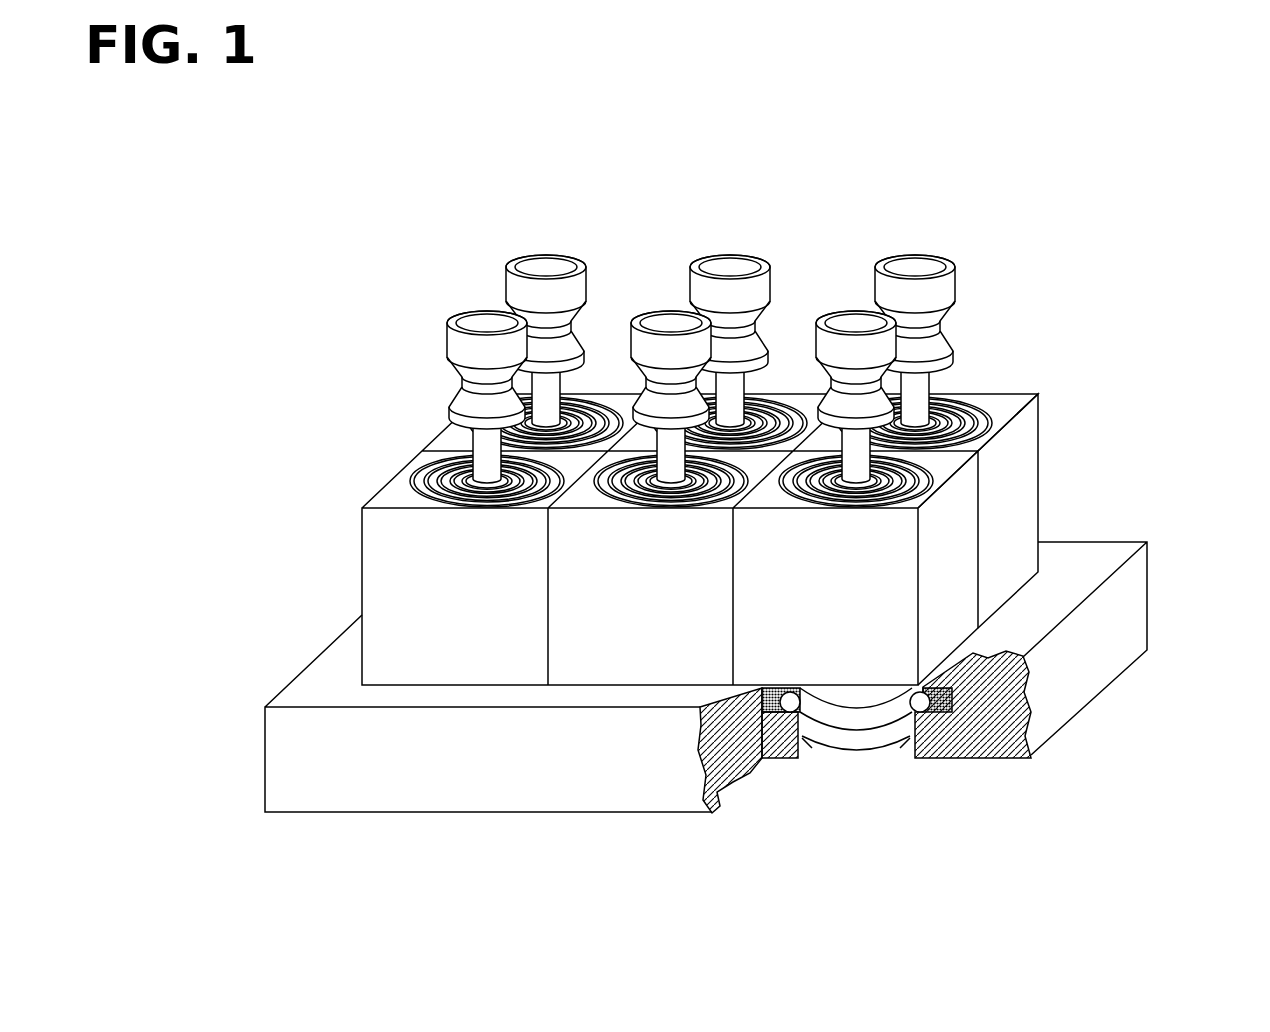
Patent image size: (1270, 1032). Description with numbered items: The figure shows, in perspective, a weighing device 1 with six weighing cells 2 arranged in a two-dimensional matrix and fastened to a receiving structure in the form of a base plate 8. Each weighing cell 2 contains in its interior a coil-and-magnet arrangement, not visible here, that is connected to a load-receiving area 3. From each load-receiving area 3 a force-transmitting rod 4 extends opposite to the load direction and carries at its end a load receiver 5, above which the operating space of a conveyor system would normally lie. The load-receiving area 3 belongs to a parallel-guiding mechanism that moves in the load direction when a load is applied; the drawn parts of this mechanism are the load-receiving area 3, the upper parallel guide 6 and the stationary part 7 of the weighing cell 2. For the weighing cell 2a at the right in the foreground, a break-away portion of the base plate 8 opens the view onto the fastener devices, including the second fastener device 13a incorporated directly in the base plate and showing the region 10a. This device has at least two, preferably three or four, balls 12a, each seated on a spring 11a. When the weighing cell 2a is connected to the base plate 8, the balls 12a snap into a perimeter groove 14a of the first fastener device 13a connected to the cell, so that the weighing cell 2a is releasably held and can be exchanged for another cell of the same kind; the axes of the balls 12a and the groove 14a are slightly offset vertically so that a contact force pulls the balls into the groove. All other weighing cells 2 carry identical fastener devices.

The weighing device 1 is at (714, 535).
The weighing cell 2 is at (412, 590).
The weighing cell 2a is at (953, 582).
The load-receiving area 3 is at (958, 397).
The force-transmitting rod 4 is at (917, 390).
The load receiver 5 is at (910, 292).
The upper parallel guide 6 is at (975, 408).
The stationary part 7 is at (1007, 492).
The base plate 8 is at (1115, 617).
The channel 10a is at (858, 766).
The spring 11a is at (790, 708).
The ball 12a is at (772, 762).
The fastener device 13a is at (977, 760).
The perimeter groove 14a is at (870, 710).